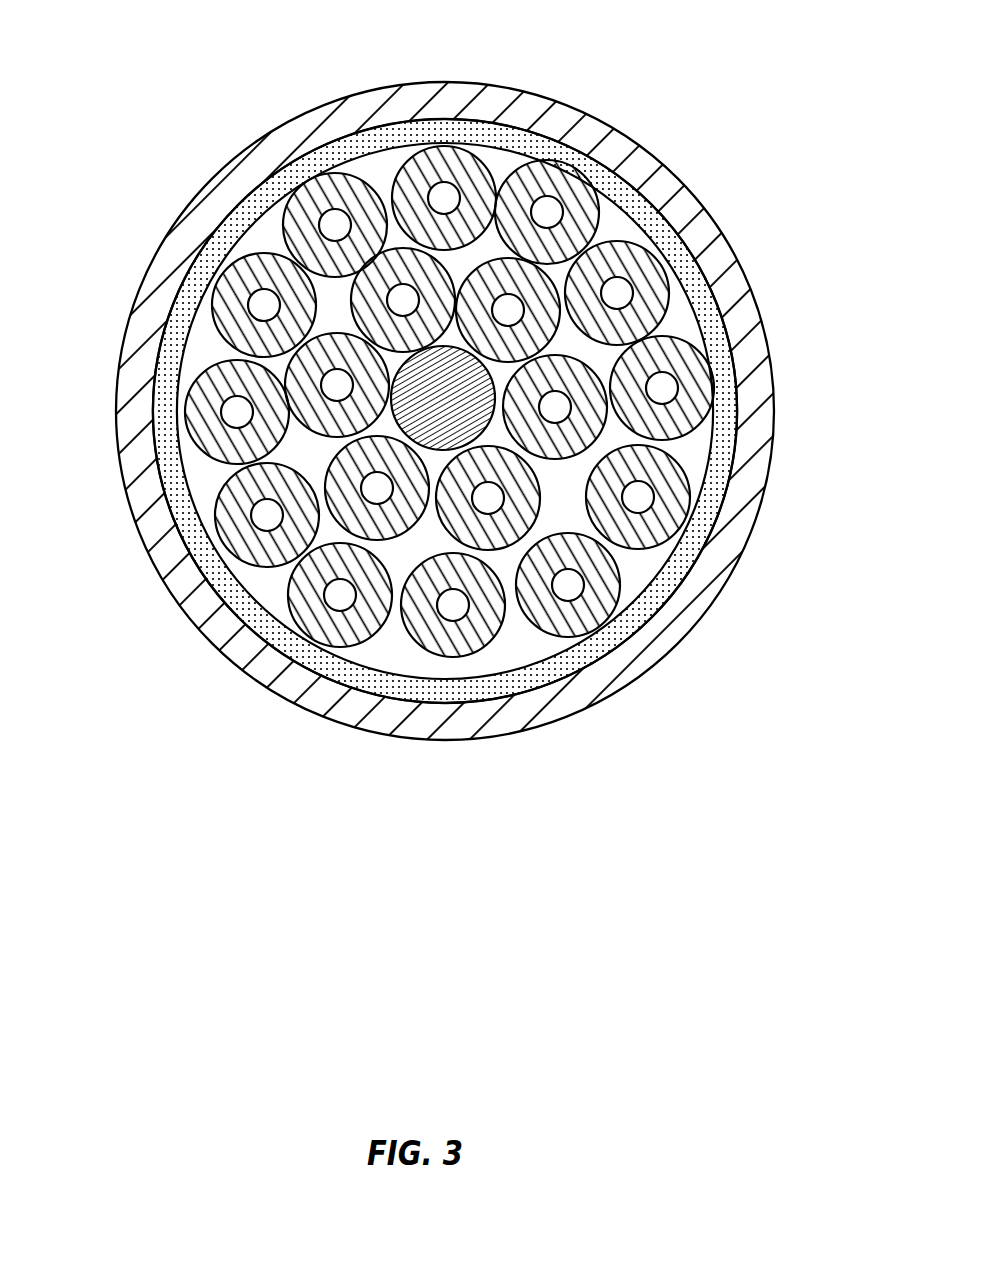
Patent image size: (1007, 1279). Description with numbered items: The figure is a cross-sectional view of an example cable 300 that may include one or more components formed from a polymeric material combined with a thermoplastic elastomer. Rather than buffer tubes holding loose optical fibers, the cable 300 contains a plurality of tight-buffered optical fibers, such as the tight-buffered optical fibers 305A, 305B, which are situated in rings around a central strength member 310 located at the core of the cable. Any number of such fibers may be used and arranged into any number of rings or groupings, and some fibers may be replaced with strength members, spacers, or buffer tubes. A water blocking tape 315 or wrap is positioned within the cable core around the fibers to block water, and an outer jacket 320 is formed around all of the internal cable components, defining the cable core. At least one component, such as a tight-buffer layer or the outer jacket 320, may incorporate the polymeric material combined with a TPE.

The cable 300 is at (451, 448).
The tight-buffered optical fiber 305A is at (510, 162).
The tight-buffered optical fiber 305B is at (282, 233).
The central strength member 310 is at (575, 534).
The water blocking tape 315 is at (728, 379).
The outer jacket 320 is at (618, 131).